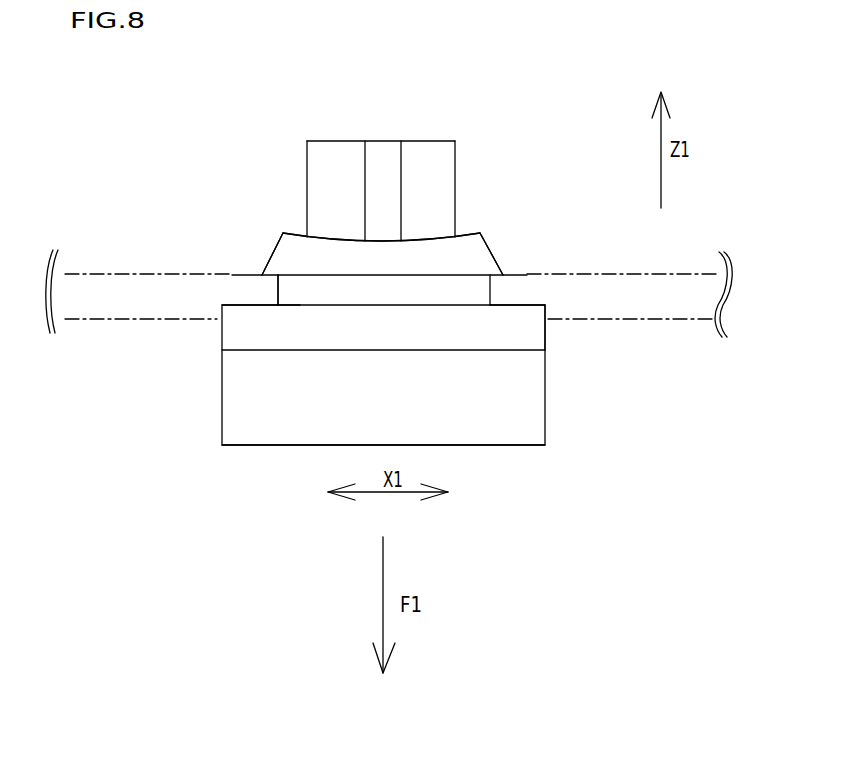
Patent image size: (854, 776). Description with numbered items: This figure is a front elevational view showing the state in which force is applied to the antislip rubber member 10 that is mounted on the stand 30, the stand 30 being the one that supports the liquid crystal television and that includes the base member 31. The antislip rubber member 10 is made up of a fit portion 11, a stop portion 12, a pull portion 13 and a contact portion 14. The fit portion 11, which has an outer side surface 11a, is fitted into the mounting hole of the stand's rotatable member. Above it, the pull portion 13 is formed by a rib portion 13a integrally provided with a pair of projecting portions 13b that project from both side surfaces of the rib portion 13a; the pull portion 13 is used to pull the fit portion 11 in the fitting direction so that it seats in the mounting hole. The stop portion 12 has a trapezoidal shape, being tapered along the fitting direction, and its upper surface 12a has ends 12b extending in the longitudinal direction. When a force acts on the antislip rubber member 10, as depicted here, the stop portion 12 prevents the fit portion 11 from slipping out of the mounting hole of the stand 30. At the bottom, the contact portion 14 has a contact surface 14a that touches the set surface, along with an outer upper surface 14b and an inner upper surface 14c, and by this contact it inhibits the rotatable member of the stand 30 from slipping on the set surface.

The antislip rubber member 10 is at (492, 72).
The fit portion 11 is at (322, 293).
The outer side surface 11a is at (277, 294).
The stop portion 12 is at (470, 257).
The upper surface 12a is at (467, 233).
The ends 12b is at (283, 232).
The pull portion 13 is at (460, 65).
The rib portion 13a is at (435, 165).
The projecting portions 13b is at (392, 165).
The contact portion 14 is at (545, 389).
The contact surface 14a is at (272, 433).
The outer upper surface 14b is at (512, 303).
The inner upper surface 14c is at (545, 305).
The stand 30 is at (100, 272).
The base member 31 is at (293, 304).